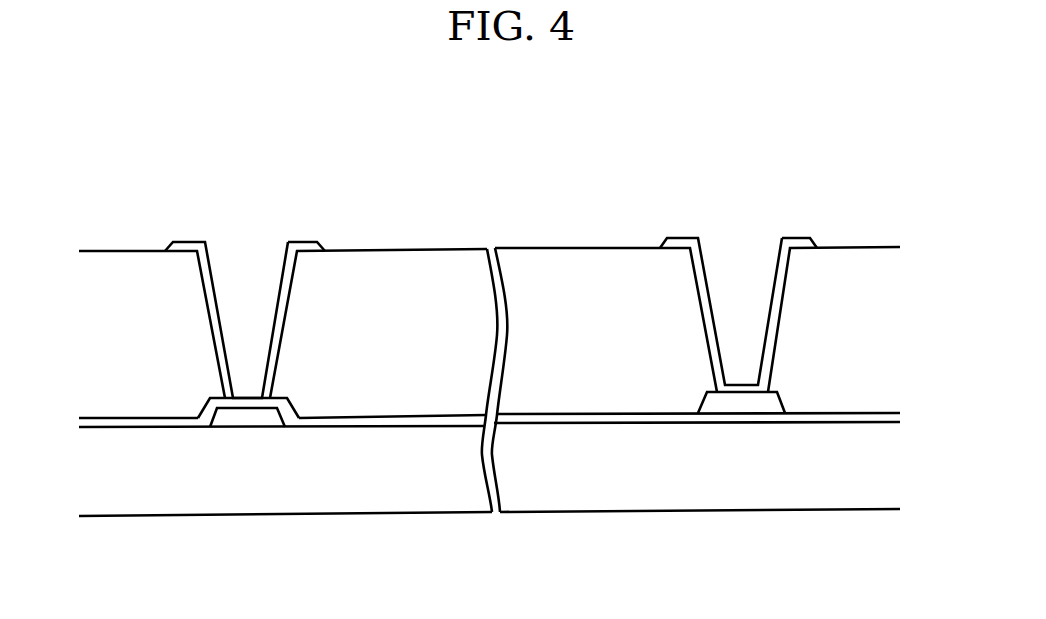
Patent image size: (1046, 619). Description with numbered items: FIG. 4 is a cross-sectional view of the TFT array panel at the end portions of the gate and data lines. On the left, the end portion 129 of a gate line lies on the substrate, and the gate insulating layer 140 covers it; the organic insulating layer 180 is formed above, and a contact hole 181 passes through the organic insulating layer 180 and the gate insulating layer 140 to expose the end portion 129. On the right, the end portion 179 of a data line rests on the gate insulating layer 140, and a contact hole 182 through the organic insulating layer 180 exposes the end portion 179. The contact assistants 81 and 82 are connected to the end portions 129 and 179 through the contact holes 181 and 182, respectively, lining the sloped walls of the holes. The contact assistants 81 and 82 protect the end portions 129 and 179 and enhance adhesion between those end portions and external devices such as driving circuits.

The gate insulating layer 140 is at (140, 418).
The end portion of the gate line 129 is at (250, 415).
The end portion of the data line 179 is at (741, 400).
The organic insulating layer 180 is at (390, 381).
The contact hole 181 is at (205, 288).
The contact hole 182 is at (698, 290).
The contact assistant 81 is at (303, 248).
The contact assistant 82 is at (803, 238).